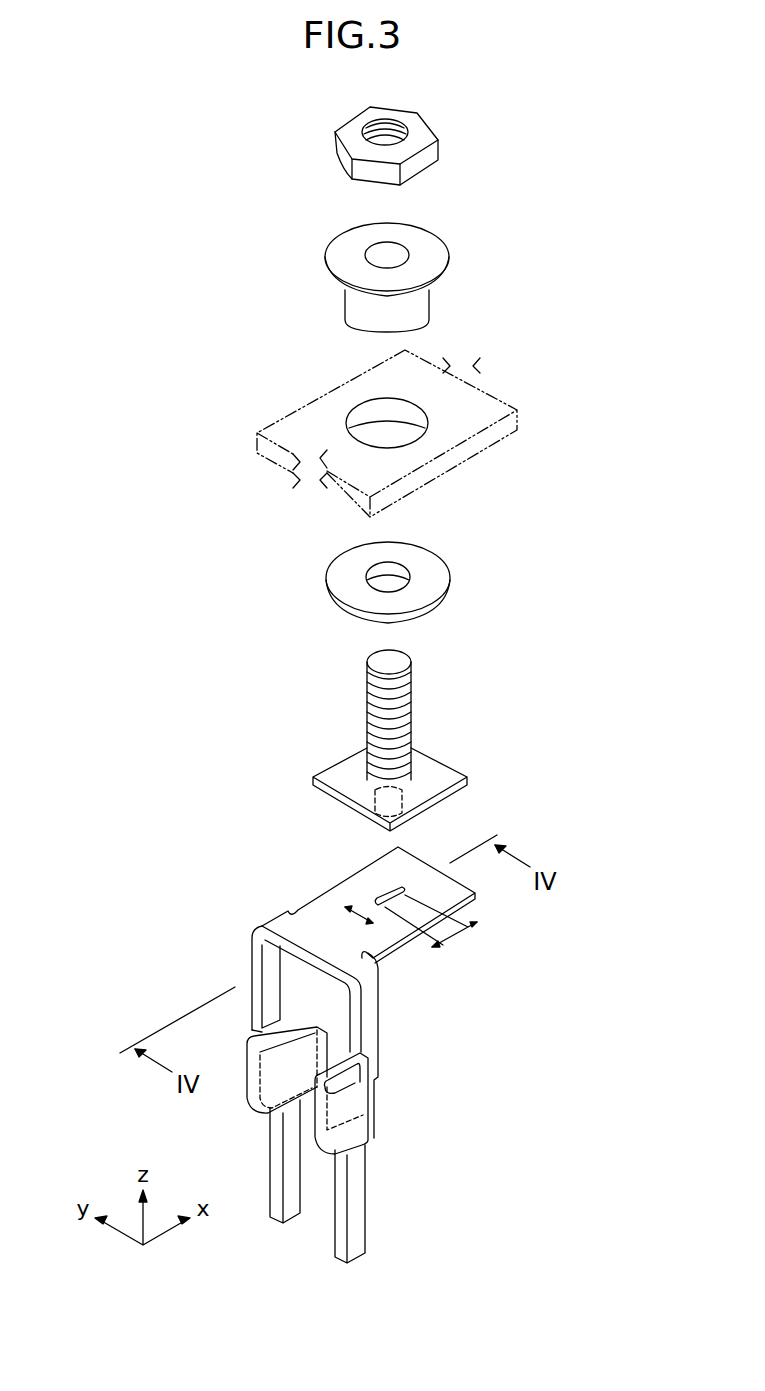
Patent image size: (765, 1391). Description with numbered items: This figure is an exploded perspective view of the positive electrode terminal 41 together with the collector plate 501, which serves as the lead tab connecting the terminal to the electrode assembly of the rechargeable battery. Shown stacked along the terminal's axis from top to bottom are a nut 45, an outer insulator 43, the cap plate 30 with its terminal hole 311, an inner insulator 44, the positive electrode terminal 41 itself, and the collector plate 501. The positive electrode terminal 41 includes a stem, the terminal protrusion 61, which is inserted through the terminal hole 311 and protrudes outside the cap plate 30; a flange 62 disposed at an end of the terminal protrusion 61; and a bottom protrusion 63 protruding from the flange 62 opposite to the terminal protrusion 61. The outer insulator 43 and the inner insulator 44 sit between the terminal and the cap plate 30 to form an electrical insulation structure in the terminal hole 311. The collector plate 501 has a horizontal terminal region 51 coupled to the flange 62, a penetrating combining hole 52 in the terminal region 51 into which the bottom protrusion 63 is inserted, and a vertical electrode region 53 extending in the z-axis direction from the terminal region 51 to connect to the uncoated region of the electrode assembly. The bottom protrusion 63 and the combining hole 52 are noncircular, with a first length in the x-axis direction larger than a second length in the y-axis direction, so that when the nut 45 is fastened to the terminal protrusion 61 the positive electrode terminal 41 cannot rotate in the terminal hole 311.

The nut 45 is at (357, 138).
The outer insulator 43 is at (440, 254).
The cap plate 30 is at (372, 427).
The terminal hole 311 is at (420, 418).
The inner insulator 44 is at (432, 572).
The positive electrode terminal 41 is at (380, 740).
The terminal protrusion 61 is at (409, 680).
The flange 62 is at (420, 758).
The bottom protrusion 63 is at (400, 794).
The collector plate 501 is at (288, 1028).
The terminal region 51 is at (352, 965).
The combining hole 52 is at (380, 899).
The electrode region 53 is at (355, 1178).